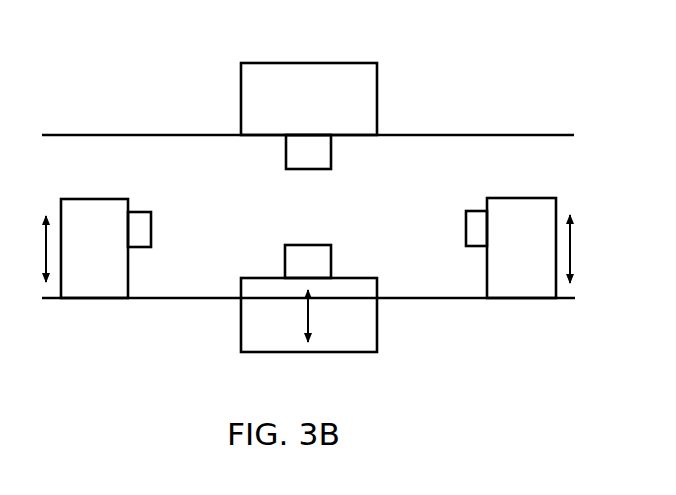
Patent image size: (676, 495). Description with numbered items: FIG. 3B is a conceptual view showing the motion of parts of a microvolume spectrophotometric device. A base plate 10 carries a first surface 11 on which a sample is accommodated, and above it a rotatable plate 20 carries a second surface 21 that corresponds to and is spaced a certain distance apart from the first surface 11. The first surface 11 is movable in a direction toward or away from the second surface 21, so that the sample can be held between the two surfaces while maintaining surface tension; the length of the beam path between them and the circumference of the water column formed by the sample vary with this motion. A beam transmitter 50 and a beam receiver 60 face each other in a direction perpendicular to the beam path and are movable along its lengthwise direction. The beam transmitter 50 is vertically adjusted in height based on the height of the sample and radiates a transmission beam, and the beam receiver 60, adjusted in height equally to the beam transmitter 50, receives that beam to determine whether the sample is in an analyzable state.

The base plate 10 is at (308, 315).
The first surface 11 is at (284, 257).
The rotatable plate 20 is at (308, 99).
The second surface 21 is at (285, 153).
The beam transmitter 50 is at (141, 210).
The beam receiver 60 is at (473, 210).